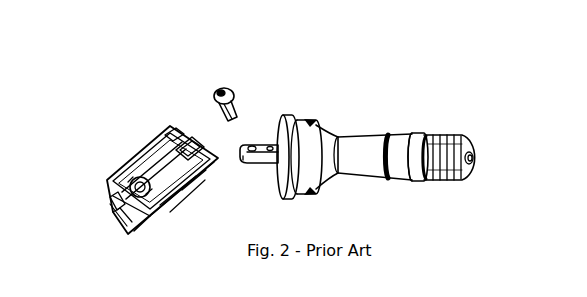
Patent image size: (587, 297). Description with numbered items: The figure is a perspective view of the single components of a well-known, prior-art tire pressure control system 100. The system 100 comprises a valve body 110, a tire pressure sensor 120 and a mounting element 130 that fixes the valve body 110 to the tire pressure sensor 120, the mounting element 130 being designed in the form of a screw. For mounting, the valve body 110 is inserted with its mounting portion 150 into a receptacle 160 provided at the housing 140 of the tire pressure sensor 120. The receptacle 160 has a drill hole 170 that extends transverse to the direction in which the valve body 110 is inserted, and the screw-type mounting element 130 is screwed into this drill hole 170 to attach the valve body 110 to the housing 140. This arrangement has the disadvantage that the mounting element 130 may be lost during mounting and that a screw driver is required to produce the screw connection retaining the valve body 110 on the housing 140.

The tire pressure control system 100 is at (288, 78).
The valve body 110 is at (411, 128).
The tire pressure sensor 120 is at (107, 164).
The mounting element 130 is at (225, 78).
The housing 140 is at (117, 215).
The mounting portion 150 is at (253, 165).
The receptacle 160 is at (199, 134).
The drill hole 170 is at (180, 127).